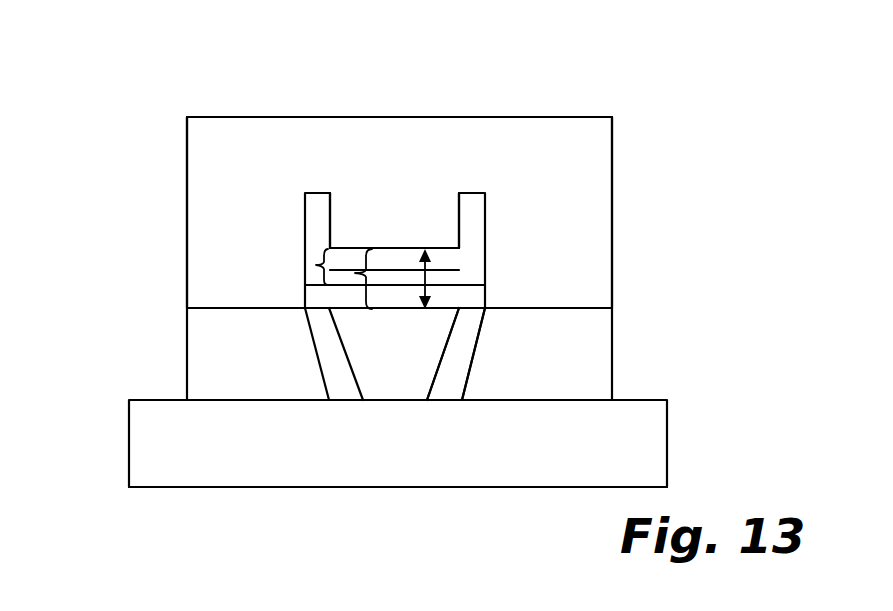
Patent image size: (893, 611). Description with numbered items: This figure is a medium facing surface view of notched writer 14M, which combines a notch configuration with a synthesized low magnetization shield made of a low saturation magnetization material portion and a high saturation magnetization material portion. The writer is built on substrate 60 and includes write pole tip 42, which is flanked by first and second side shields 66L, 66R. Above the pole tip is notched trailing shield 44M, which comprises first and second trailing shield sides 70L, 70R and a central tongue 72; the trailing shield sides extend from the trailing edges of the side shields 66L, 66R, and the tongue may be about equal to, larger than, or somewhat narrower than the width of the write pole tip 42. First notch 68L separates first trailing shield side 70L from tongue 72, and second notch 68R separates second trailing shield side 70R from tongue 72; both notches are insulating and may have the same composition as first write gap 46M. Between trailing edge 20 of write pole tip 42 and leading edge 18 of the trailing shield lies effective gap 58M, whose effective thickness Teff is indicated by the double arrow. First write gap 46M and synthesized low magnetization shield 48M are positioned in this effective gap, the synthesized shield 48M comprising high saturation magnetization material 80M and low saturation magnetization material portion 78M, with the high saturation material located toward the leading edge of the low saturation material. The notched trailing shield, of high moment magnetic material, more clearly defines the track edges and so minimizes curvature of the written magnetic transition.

The writer 14M is at (155, 144).
The trailing edge 20 is at (455, 106).
The leading edge 18 is at (195, 494).
The substrate 60 is at (398, 443).
The notched trailing shield 44M is at (399, 212).
The first notch 68L is at (313, 206).
The second notch 68R is at (472, 210).
The tongue 72 is at (328, 156).
The high saturation magnetization material 80M is at (397, 278).
The low saturation magnetization material portion 78M is at (443, 257).
The synthesized low magnetization shield 48M is at (316, 265).
The effective gap 58M is at (355, 273).
The first trailing shield side 70L is at (226, 267).
The second trailing shield side 70R is at (595, 274).
The first side shield 66L is at (283, 354).
The second side shield 66R is at (513, 354).
The write pole tip 42 is at (394, 354).
The first write gap 46M is at (463, 342).
The effective thickness Teff is at (437, 280).